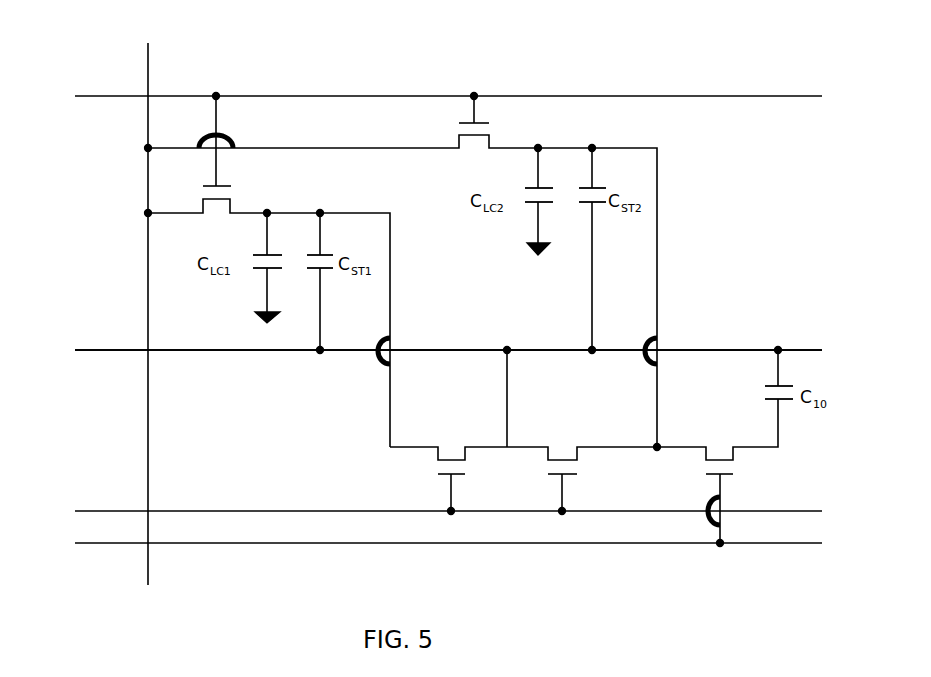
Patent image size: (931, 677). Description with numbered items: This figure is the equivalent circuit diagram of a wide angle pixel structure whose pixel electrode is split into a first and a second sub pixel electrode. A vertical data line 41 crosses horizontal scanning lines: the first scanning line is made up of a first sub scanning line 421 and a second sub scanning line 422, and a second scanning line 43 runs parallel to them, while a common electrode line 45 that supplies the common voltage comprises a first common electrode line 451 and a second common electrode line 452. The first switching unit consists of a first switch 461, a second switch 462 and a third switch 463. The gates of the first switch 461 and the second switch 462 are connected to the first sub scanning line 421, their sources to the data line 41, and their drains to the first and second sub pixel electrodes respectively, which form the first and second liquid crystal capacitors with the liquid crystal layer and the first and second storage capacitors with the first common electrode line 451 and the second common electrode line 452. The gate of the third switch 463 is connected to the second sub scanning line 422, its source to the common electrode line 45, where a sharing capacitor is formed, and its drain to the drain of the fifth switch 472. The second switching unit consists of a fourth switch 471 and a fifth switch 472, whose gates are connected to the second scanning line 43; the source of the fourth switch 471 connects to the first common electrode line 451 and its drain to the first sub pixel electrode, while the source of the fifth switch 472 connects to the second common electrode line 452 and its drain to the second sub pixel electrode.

The data line 41 is at (145, 298).
The first sub scanning line 421 is at (427, 98).
The second sub scanning line 422 is at (422, 545).
The second scanning line 43 is at (429, 512).
The common electrode line 45 is at (428, 338).
The first common electrode line 451 is at (442, 338).
The second common electrode line 452 is at (448, 338).
The first switch 461 is at (234, 196).
The second switch 462 is at (493, 133).
The third switch 463 is at (734, 462).
The fourth switch 471 is at (437, 462).
The fifth switch 472 is at (580, 466).